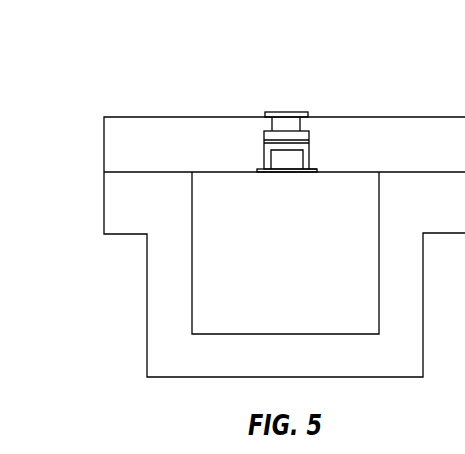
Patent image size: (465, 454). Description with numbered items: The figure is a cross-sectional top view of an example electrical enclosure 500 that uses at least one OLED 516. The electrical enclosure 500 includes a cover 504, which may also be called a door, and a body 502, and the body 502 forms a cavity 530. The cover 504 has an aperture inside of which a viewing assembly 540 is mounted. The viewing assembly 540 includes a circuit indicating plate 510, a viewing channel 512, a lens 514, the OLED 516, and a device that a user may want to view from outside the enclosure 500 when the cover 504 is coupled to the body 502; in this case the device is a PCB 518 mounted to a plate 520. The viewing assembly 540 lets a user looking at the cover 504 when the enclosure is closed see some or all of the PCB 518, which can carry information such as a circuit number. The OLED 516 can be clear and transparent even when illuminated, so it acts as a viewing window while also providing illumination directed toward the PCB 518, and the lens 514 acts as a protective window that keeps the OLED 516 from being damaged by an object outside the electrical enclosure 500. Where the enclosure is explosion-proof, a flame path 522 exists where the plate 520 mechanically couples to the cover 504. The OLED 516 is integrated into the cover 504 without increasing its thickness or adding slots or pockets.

The electrical enclosure 500 is at (116, 71).
The body 502 is at (450, 215).
The cover 504 is at (450, 157).
The circuit indicating plate 510 is at (301, 125).
The viewing channel 512 is at (283, 113).
The lens 514 is at (264, 135).
The OLED 516 is at (309, 141).
The PCB 518 is at (285, 158).
The plate 520 is at (311, 172).
The flame path 522 is at (257, 169).
The cavity 530 is at (304, 266).
The viewing assembly 540 is at (300, 91).